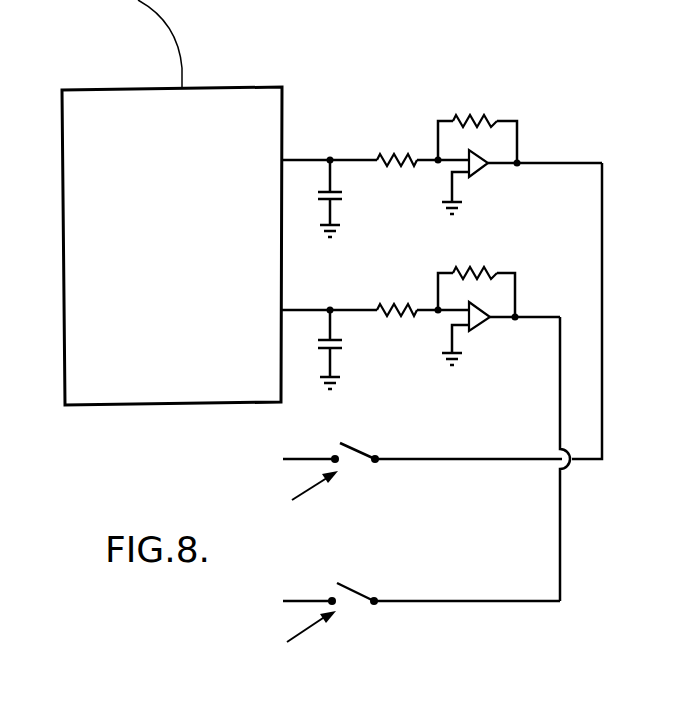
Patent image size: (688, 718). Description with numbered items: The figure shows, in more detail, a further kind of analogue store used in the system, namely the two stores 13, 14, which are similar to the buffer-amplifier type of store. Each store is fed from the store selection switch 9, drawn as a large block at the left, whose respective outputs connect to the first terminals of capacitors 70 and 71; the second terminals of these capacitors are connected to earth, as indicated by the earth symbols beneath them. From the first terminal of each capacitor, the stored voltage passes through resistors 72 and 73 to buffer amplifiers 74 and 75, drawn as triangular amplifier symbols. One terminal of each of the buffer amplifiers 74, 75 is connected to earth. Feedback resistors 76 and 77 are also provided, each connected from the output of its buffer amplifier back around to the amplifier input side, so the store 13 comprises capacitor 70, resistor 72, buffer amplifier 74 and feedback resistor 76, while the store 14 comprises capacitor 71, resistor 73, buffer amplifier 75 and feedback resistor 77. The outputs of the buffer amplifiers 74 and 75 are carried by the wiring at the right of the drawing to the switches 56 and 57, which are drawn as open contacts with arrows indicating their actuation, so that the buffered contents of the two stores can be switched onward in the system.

The store selection switch 9 is at (180, 383).
The store 13 is at (520, 138).
The store 14 is at (512, 293).
The switch 56 is at (365, 449).
The switch 57 is at (365, 591).
The capacitor 70 is at (340, 216).
The capacitor 71 is at (340, 362).
The resistor 72 is at (396, 151).
The resistor 73 is at (396, 300).
The buffer amplifier 74 is at (484, 166).
The buffer amplifier 75 is at (485, 319).
The feedback resistor 76 is at (522, 118).
The feedback resistor 77 is at (522, 288).